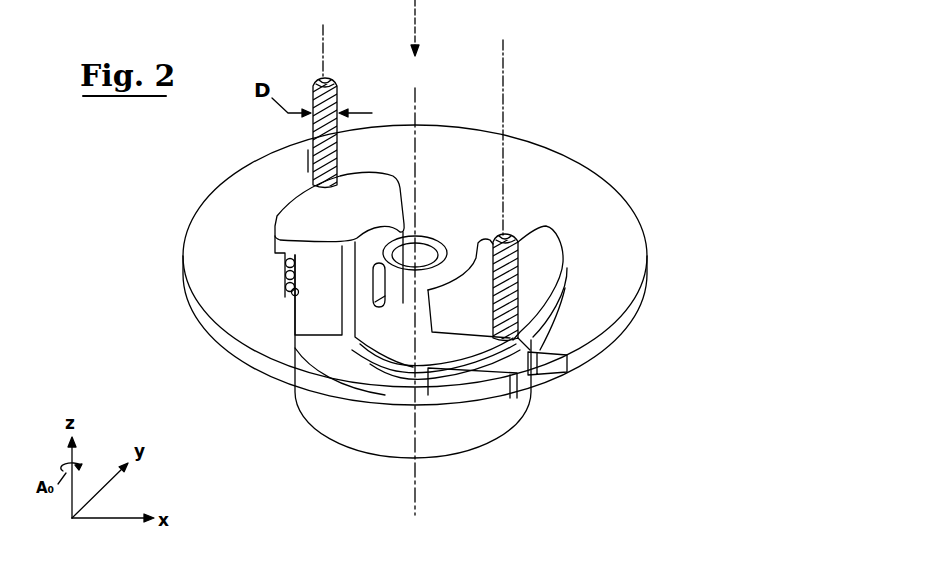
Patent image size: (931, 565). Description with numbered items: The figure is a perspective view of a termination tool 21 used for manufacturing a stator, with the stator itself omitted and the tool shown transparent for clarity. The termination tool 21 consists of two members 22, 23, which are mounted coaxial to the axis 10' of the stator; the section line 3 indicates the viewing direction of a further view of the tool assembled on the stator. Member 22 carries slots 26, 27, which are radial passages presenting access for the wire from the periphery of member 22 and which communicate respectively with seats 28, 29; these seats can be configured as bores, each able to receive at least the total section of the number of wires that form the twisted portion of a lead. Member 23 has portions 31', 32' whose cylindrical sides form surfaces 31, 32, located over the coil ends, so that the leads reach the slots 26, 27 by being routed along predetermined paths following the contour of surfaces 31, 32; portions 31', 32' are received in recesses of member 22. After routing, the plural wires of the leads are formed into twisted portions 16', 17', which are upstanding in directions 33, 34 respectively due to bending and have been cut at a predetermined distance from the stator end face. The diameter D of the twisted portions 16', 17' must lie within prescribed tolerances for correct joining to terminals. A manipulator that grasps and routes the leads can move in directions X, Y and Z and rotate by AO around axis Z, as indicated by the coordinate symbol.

The section line / viewing direction 3 is at (418, 33).
The axis of stator 10' is at (446, 297).
The twisted portion of lead 16' is at (354, 127).
The twisted portion of lead 17' is at (525, 274).
The termination tool 21 is at (187, 353).
The member of termination tool 22 is at (530, 152).
The member of termination tool 23 is at (332, 430).
The slot 26 is at (517, 352).
The slot 27 is at (303, 163).
The seat 28 is at (520, 340).
The seat 29 is at (310, 177).
The surface 31 is at (574, 307).
The portion of member 23 31' is at (495, 268).
The surface 32 is at (317, 299).
The portion of member 23 32' is at (343, 190).
The direction 33 is at (322, 55).
The direction 34 is at (504, 62).